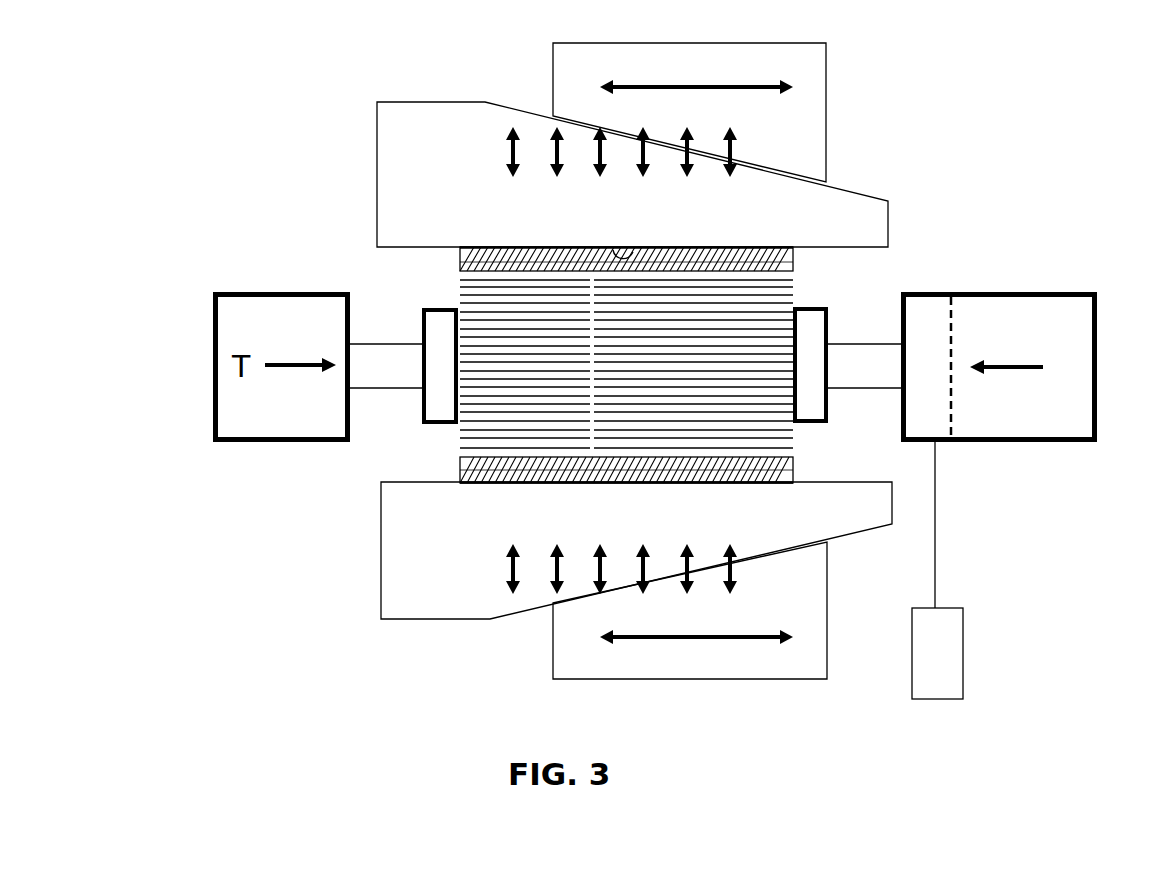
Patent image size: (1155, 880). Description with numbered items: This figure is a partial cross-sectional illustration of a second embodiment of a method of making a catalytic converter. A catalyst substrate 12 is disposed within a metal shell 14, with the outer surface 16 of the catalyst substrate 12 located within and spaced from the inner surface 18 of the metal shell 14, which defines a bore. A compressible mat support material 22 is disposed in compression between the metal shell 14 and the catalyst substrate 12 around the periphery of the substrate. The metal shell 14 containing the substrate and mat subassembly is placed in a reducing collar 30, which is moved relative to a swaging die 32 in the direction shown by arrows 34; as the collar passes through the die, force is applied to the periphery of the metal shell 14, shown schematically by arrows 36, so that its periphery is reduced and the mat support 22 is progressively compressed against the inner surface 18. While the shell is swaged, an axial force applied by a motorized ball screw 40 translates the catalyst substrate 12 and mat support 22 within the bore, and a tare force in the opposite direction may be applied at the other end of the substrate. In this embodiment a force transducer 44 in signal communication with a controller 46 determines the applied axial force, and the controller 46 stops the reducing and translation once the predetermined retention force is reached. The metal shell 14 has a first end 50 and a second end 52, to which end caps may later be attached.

The catalyst substrate 12 is at (690, 280).
The metal shell 14 is at (737, 247).
The outer surface 16 is at (570, 262).
The inner surface 18 is at (613, 250).
The compressible mat support material 22 is at (637, 474).
The reducing collar 30 is at (870, 227).
The swaging die 32 is at (807, 122).
The arrows 34 is at (692, 87).
The arrows 36 is at (507, 152).
The motorized ball screw 40 is at (1073, 312).
The force transducer 44 is at (930, 310).
The controller 46 is at (948, 635).
The first end 50 is at (468, 283).
The second end 52 is at (795, 286).